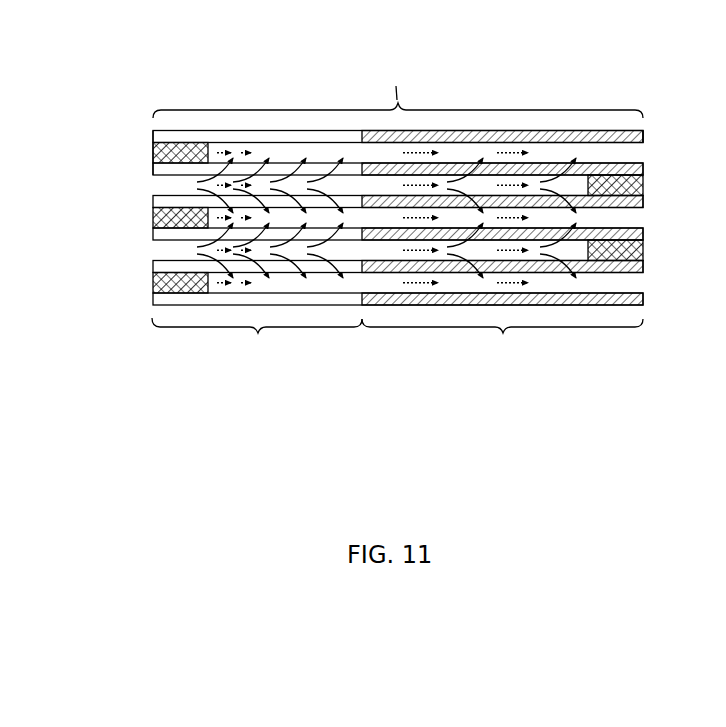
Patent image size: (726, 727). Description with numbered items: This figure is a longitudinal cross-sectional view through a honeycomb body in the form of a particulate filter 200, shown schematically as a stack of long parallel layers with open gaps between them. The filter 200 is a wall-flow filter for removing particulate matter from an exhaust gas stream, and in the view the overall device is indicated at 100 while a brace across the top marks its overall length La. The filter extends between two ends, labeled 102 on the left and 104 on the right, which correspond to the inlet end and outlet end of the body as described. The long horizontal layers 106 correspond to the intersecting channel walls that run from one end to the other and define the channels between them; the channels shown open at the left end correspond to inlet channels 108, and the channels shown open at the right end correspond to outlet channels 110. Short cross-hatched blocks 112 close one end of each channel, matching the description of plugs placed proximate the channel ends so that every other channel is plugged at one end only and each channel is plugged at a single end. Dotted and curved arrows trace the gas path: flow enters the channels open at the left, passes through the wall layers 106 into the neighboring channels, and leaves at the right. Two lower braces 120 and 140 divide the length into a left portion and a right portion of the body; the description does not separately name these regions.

The laminated plate assembly 100 is at (577, 94).
The first end of assembly 102 is at (121, 103).
The second end of assembly 104 is at (656, 127).
The plate 106 is at (310, 130).
The plate surface / flow channel 108 is at (148, 178).
The solid plate portion / outlet 110 is at (647, 152).
The spacer block 112 is at (152, 145).
The porous region 120 is at (257, 337).
The solid region 140 is at (502, 337).
The particulate filter 200 is at (155, 186).